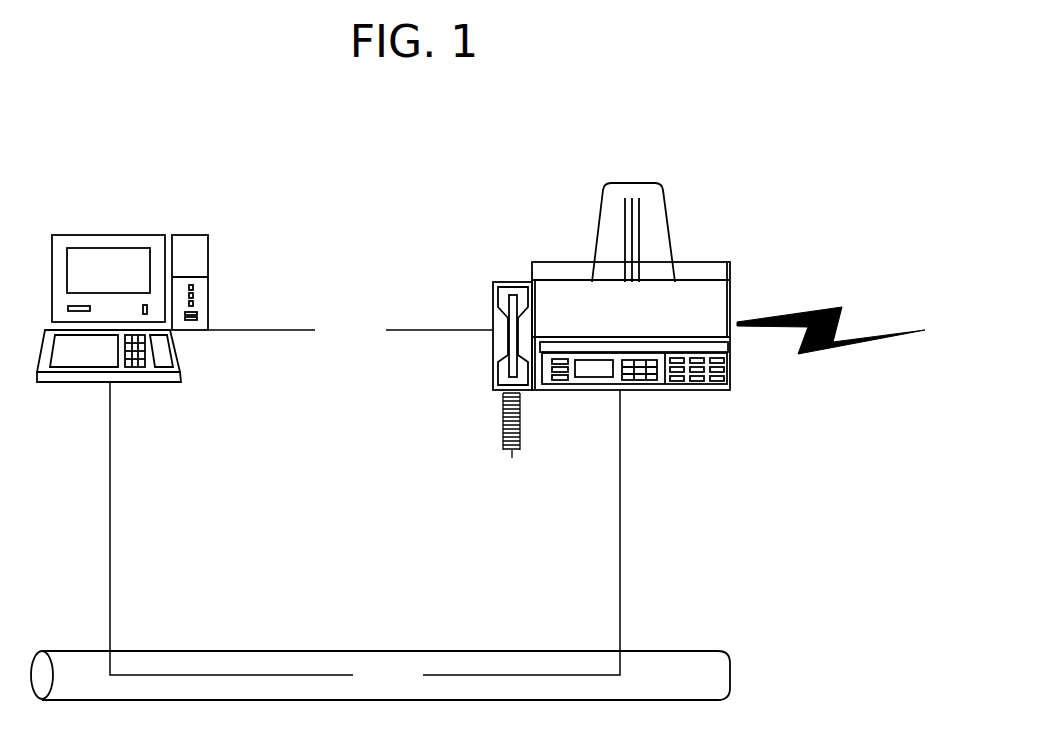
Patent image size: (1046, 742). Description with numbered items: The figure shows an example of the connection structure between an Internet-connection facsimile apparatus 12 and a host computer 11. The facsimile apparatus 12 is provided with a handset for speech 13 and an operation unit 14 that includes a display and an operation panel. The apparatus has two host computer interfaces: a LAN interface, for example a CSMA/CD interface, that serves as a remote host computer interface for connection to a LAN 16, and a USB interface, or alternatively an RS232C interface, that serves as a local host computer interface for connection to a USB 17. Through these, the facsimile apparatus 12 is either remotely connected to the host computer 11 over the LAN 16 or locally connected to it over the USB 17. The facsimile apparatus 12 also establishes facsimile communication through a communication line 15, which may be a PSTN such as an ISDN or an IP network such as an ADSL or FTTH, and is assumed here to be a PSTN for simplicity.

The host computer 11 is at (108, 235).
The Internet-connection facsimile apparatus 12 is at (582, 320).
The handset for speech 13 is at (493, 378).
The operation unit 14 is at (697, 390).
The communication line 15 is at (843, 348).
The LAN 16 is at (687, 650).
The USB 17 is at (422, 330).